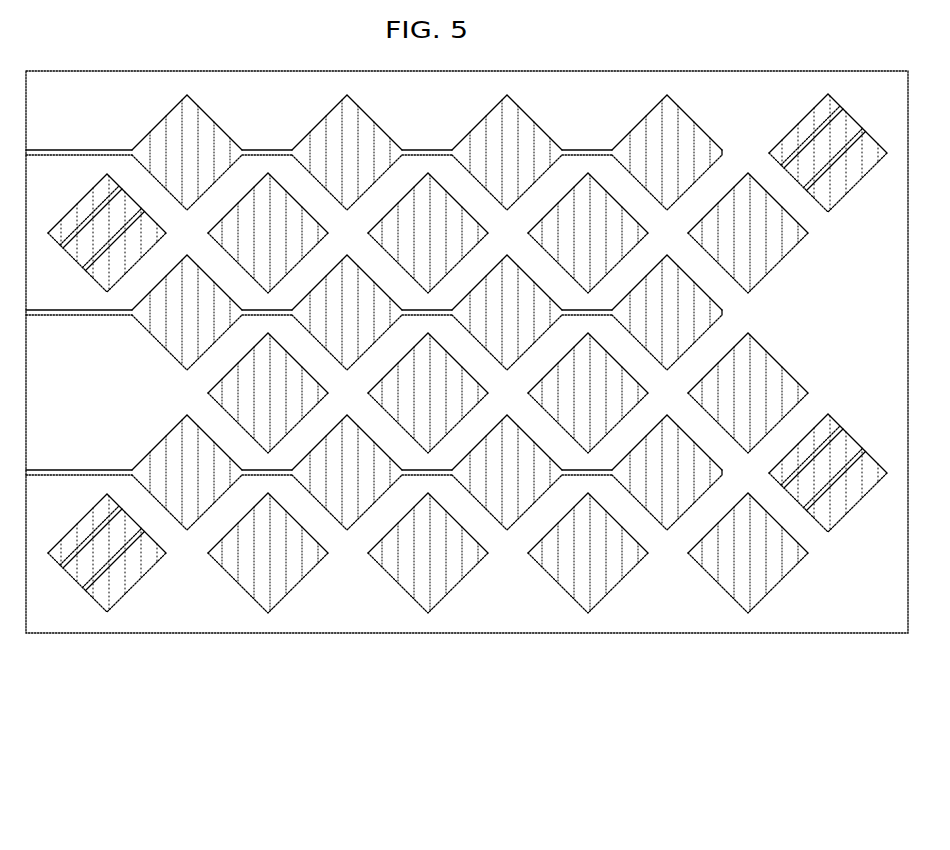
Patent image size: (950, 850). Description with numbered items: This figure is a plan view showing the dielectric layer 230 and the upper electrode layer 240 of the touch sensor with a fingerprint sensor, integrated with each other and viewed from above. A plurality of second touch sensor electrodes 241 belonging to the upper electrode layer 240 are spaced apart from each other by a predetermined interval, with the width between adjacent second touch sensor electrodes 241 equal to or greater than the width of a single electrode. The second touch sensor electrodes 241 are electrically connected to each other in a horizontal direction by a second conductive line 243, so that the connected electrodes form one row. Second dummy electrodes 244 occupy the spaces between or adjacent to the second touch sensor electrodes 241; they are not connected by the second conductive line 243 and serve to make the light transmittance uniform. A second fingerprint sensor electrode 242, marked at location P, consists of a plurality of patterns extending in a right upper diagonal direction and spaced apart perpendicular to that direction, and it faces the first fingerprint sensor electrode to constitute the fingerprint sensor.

The dielectric layer 230 is at (302, 633).
The upper electrode layer 240 is at (661, 720).
The second touch sensor electrode 241 is at (510, 520).
The second fingerprint sensor electrode 242 is at (474, 409).
The second conductive line 243 is at (590, 474).
The second dummy electrode 244 is at (423, 597).
The point P is at (853, 503).